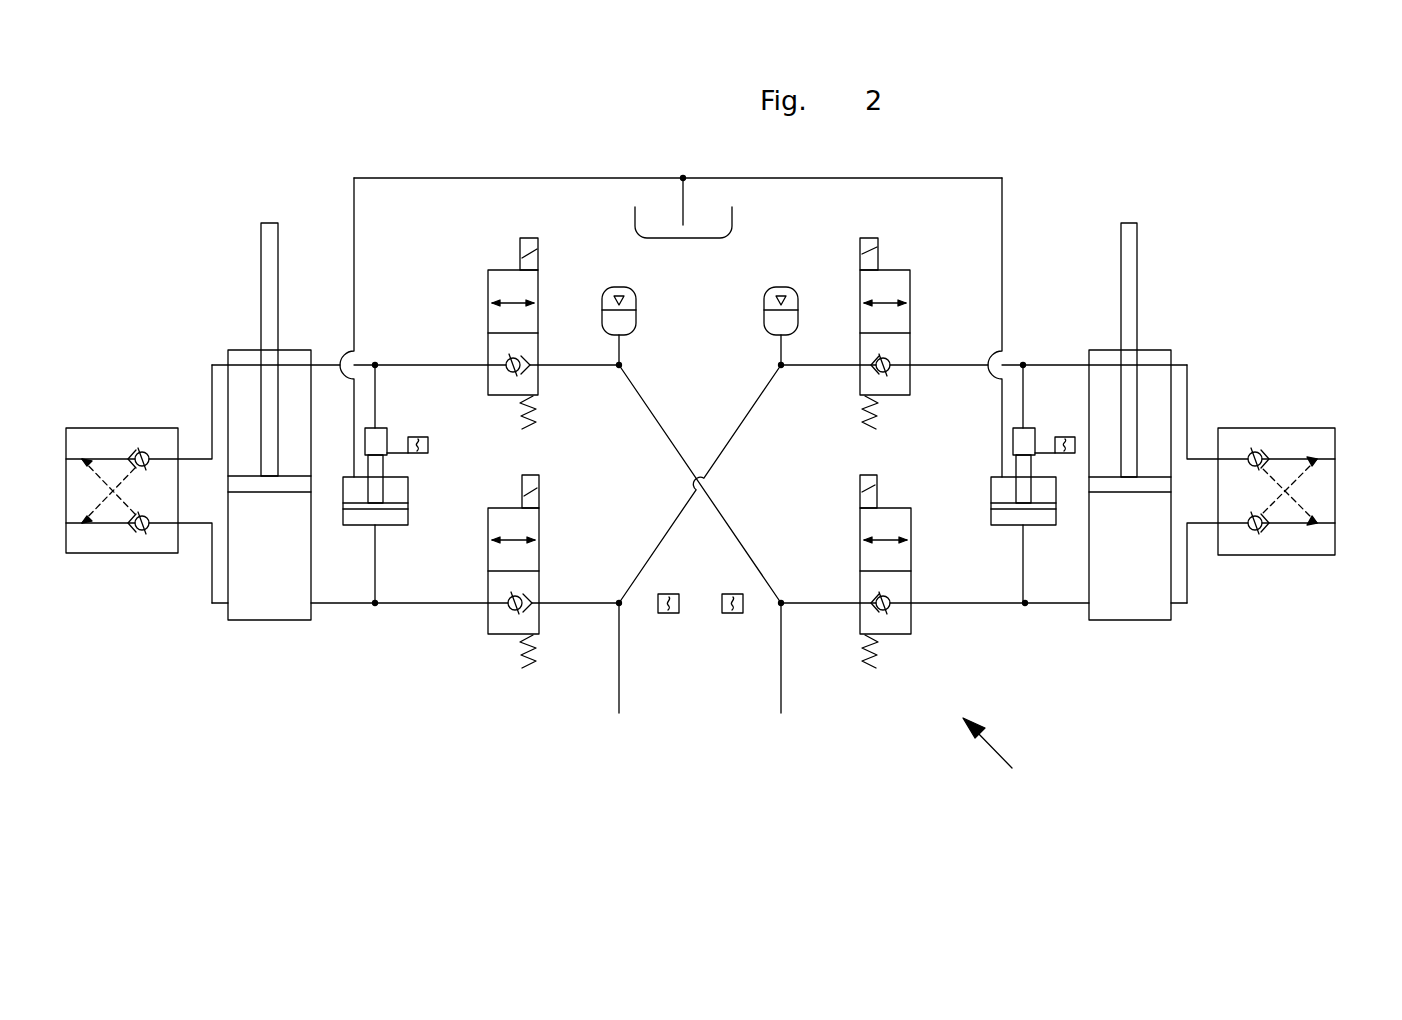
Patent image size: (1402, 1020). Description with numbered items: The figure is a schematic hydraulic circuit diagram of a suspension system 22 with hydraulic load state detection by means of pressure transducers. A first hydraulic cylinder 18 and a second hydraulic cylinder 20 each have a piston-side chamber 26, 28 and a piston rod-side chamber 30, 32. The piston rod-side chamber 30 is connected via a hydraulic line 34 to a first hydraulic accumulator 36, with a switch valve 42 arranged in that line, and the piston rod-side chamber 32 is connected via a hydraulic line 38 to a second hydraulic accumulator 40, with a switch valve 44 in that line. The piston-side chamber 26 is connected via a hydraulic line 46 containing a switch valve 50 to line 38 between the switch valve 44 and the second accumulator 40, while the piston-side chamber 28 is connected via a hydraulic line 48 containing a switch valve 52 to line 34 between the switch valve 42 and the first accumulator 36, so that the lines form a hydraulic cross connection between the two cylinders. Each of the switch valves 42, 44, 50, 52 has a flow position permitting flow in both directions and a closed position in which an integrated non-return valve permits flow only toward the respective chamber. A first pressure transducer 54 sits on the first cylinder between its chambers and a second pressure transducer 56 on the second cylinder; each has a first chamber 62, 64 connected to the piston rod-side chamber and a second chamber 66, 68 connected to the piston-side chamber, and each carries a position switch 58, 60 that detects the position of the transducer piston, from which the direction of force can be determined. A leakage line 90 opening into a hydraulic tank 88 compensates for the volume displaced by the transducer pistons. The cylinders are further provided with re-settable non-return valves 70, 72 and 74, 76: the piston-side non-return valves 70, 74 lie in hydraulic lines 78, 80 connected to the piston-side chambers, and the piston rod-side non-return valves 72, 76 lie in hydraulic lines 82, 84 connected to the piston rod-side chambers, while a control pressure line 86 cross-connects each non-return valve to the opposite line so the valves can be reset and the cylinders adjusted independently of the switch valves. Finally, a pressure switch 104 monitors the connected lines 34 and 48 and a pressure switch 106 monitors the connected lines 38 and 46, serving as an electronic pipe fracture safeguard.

The first hydraulic cylinder 18 is at (293, 350).
The second hydraulic cylinder 20 is at (1173, 354).
The suspension system 22 is at (1006, 753).
The piston-side chamber 26 is at (257, 612).
The piston-side chamber 28 is at (1150, 612).
The piston rod-side chamber 30 is at (243, 350).
The piston rod-side chamber 32 is at (1149, 373).
The hydraulic line 34 is at (330, 365).
The first hydraulic accumulator 36 is at (617, 287).
The hydraulic line 38 is at (1070, 365).
The second hydraulic accumulator 40 is at (790, 289).
The switch valve 42 is at (507, 270).
The switch valve 44 is at (903, 270).
The hydraulic line 46 is at (343, 604).
The hydraulic line 48 is at (1057, 603).
The switch valve 50 is at (539, 555).
The switch valve 52 is at (860, 555).
The first pressure transducer 54 is at (408, 492).
The second pressure transducer 56 is at (991, 492).
The position switch 58 is at (428, 446).
The position switch 60 is at (1060, 437).
The first chamber 62 is at (377, 438).
The first chamber 64 is at (1020, 442).
The second chamber 66 is at (390, 517).
The second chamber 68 is at (1036, 517).
The non-return valve 70 is at (143, 533).
The non-return valve 72 is at (146, 451).
The non-return valve 74 is at (1255, 535).
The non-return valve 76 is at (1255, 447).
The hydraulic line 78 is at (112, 523).
The hydraulic line 80 is at (1290, 523).
The hydraulic line 82 is at (112, 460).
The hydraulic line 84 is at (1287, 459).
The control pressure line 86 is at (97, 507).
The hydraulic tank 88 is at (682, 240).
The leakage line 90 is at (487, 178).
The pressure switch 104 is at (668, 613).
The pressure switch 106 is at (730, 613).